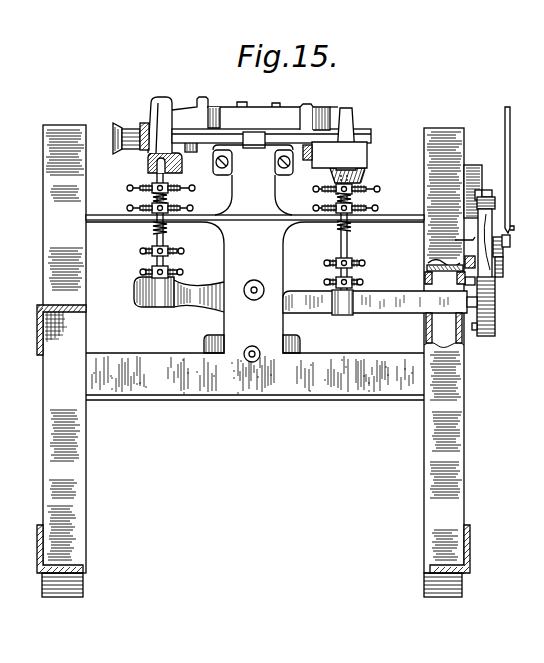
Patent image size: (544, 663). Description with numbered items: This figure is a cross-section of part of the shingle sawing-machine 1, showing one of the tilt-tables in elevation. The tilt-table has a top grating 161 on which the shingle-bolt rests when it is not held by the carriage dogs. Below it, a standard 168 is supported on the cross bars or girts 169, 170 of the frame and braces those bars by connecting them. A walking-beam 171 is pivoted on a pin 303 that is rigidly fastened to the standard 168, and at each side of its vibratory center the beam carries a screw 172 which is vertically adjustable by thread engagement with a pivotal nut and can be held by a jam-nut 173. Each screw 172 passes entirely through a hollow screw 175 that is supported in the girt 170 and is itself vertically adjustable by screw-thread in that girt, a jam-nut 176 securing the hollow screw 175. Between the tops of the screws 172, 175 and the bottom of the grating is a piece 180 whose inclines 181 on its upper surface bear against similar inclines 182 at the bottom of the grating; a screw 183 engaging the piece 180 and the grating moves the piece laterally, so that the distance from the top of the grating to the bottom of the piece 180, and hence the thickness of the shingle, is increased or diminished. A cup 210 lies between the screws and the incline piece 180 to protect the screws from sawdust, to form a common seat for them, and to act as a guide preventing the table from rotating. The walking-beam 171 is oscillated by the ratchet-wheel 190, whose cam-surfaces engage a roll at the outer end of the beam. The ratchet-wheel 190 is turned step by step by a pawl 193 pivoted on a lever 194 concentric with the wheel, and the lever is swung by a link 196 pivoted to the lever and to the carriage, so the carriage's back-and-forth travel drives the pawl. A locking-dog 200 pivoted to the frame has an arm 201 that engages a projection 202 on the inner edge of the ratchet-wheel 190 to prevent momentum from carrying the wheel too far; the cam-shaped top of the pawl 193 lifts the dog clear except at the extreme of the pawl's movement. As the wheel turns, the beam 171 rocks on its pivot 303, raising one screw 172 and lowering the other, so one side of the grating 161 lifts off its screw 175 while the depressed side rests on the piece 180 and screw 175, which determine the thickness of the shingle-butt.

The frame 1 is at (86, 335).
The top grating 161 is at (271, 119).
The standard 168 is at (290, 257).
The cross bar or girt 169 is at (273, 408).
The cross bar or girt 170 is at (385, 206).
The walking-beam 171 is at (395, 285).
The screw 172 is at (148, 164).
The jam-nut 173 is at (357, 280).
The hollow screw 175 is at (206, 182).
The jam-nut 176 is at (252, 231).
The incline piece 180 is at (312, 162).
The inclines 181 is at (352, 154).
The inclines 182 is at (359, 139).
The screw 183 is at (150, 125).
The ratchet-wheel 190 is at (494, 306).
The pawl 193 is at (486, 235).
The lever 194 is at (515, 256).
The link or rod 196 is at (522, 170).
The locking-dog 200 is at (482, 183).
The arm 201 is at (465, 213).
The projection 202 is at (453, 240).
The cup 210 is at (375, 165).
The pin 303 is at (275, 270).